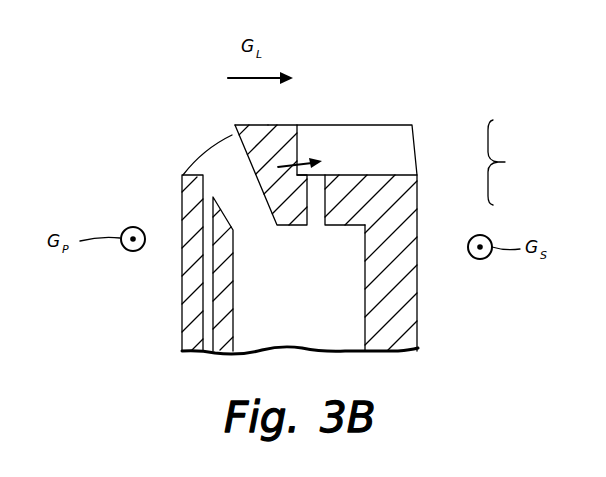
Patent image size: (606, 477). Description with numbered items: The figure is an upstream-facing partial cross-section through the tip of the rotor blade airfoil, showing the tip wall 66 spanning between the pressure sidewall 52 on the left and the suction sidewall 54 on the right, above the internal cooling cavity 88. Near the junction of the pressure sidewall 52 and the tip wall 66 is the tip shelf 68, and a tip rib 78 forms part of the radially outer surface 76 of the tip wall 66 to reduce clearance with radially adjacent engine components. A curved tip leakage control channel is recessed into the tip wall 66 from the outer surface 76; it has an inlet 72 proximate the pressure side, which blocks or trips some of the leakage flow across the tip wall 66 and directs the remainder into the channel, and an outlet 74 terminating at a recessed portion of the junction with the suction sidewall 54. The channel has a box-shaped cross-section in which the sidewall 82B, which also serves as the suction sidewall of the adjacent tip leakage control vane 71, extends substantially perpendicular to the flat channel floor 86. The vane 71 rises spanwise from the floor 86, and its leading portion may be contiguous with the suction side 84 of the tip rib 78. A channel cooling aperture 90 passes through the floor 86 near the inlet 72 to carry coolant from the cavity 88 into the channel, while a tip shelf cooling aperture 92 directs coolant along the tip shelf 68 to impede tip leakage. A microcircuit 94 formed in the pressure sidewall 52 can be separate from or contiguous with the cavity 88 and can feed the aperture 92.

The pressure sidewall 52 is at (182, 322).
The suction sidewall 54 is at (418, 300).
The tip wall 66 is at (511, 162).
The tip shelf 68 is at (230, 133).
The tip leakage control vane 71 is at (418, 120).
The control channel inlet 72 is at (288, 167).
The control channel outlet 74 is at (431, 159).
The tip outer surface 76 is at (268, 125).
The tip rib 78 is at (254, 125).
The control vane suction sidewall 82B is at (362, 142).
The tip rib suction side 84 is at (303, 143).
The control channel floor 86 is at (392, 175).
The internal cooling cavity 88 is at (273, 350).
The channel cooling aperture 90 is at (315, 228).
The tip shelf cooling aperture 92 is at (238, 198).
The airfoil sidewall microcircuit 94 is at (207, 365).